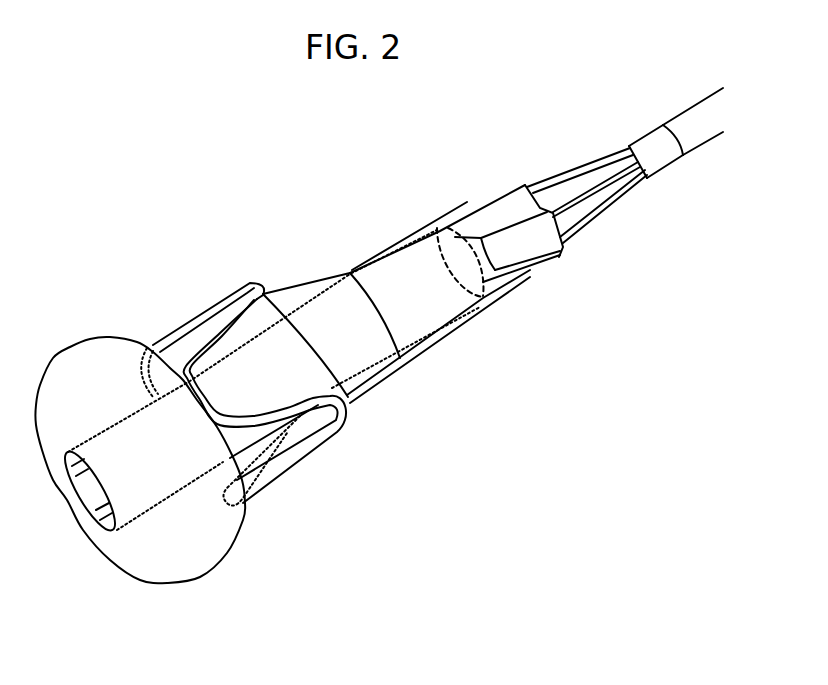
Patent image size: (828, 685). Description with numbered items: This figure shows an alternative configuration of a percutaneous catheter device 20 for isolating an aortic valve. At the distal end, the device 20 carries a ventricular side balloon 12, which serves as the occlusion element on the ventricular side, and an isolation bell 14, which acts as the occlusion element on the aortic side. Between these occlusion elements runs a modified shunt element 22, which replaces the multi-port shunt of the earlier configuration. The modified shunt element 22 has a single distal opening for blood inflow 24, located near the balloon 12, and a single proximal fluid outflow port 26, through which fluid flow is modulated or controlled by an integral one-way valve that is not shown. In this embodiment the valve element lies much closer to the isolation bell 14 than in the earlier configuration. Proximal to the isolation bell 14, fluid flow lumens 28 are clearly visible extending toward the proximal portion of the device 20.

The ventricular side balloon 12 is at (188, 538).
The isolation bell 14 is at (315, 425).
The device 20 is at (492, 442).
The modified shunt element 22 is at (240, 434).
The distal opening for blood inflow 24 is at (88, 492).
The proximal fluid outflow port 26 is at (488, 302).
The fluid flow lumens 28 is at (598, 213).